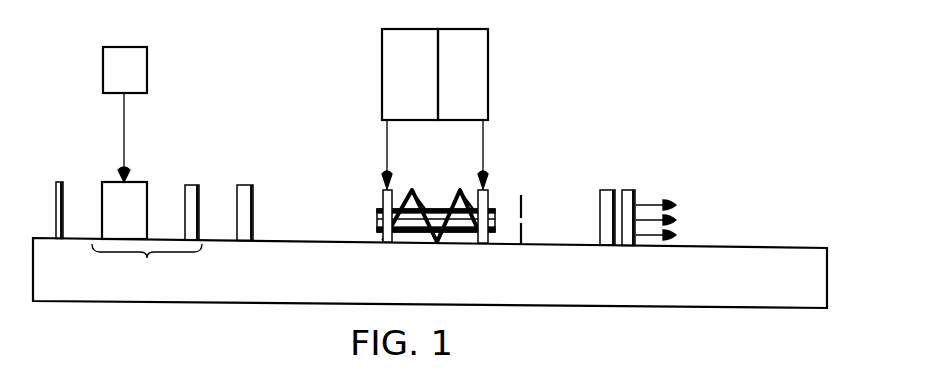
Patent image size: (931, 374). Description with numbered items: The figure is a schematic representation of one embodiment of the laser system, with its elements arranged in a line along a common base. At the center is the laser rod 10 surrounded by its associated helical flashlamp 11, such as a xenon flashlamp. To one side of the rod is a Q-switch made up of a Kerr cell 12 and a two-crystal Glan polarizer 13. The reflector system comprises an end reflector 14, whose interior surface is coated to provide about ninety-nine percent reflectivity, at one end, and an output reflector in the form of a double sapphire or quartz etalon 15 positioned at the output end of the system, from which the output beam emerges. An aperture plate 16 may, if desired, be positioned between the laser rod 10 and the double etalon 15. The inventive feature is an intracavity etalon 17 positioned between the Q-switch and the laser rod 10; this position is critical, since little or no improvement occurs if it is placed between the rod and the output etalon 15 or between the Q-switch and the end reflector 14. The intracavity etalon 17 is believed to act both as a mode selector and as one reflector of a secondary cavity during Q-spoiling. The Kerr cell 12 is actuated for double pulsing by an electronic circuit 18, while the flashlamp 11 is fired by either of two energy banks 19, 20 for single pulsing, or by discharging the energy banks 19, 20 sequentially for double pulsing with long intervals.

The laser rod 10 is at (394, 231).
The helical flashlamp 11 is at (441, 236).
The Kerr cell 12 is at (102, 219).
The two-crystal Glan polarizer 13 is at (199, 218).
The end reflector 14 is at (56, 228).
The double sapphire (or quartz) etalon 15 is at (637, 250).
The aperture plate 16 is at (521, 227).
The intracavity etalon 17 is at (253, 218).
The electronic circuit 18 is at (147, 46).
The energy bank 19 is at (460, 29).
The energy bank 20 is at (396, 29).